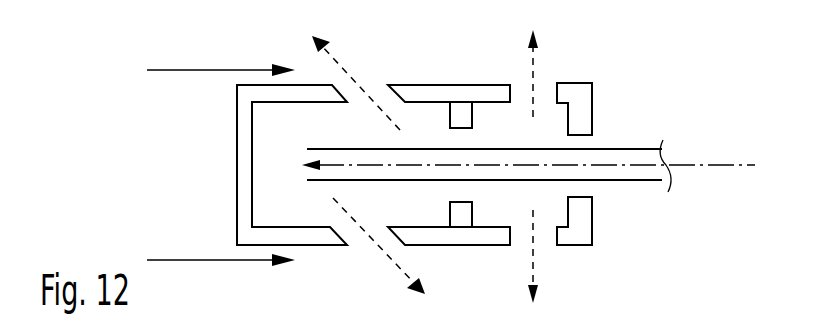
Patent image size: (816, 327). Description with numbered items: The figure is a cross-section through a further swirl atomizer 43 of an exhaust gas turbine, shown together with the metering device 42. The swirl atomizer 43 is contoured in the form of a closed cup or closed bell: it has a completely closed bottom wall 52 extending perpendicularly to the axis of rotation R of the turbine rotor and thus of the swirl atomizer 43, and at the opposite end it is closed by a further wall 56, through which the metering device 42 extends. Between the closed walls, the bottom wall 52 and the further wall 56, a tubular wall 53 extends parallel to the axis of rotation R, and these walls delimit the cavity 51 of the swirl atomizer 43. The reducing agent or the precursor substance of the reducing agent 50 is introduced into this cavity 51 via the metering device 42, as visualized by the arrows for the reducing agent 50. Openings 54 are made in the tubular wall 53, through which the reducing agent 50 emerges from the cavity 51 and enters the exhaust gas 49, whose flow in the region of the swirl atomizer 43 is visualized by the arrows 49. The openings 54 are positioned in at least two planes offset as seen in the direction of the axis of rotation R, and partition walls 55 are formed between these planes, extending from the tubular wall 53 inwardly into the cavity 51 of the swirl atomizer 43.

The metering device 42 is at (653, 135).
The swirl atomizer 43 is at (224, 178).
The arrows visualizing exhaust gas flow 49 is at (165, 72).
The reducing agent feed 50 is at (630, 168).
The cavity 51 is at (299, 213).
The bottom wall 52 is at (243, 152).
The tubular wall 53 is at (430, 238).
The openings 54 is at (379, 72).
The partition walls 55 is at (458, 112).
The further wall 56 is at (578, 93).
The axis of rotation R is at (738, 165).